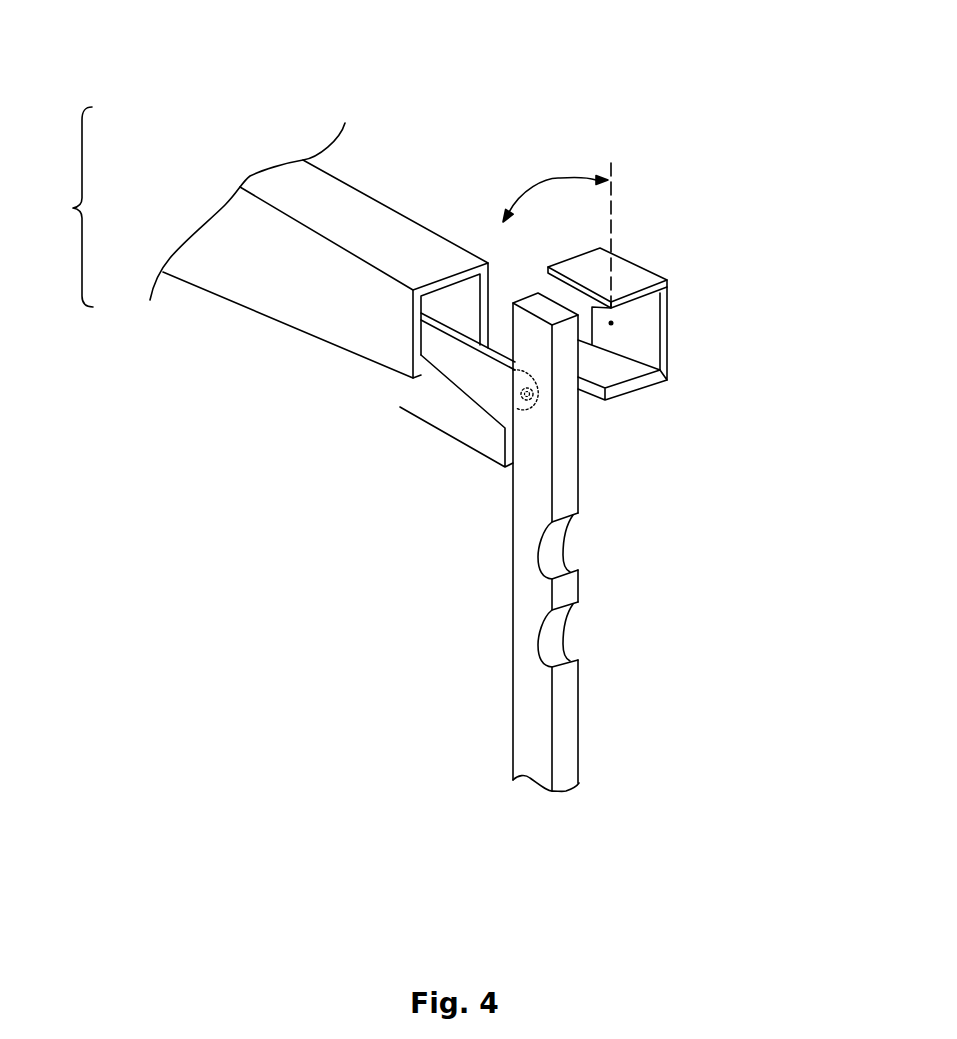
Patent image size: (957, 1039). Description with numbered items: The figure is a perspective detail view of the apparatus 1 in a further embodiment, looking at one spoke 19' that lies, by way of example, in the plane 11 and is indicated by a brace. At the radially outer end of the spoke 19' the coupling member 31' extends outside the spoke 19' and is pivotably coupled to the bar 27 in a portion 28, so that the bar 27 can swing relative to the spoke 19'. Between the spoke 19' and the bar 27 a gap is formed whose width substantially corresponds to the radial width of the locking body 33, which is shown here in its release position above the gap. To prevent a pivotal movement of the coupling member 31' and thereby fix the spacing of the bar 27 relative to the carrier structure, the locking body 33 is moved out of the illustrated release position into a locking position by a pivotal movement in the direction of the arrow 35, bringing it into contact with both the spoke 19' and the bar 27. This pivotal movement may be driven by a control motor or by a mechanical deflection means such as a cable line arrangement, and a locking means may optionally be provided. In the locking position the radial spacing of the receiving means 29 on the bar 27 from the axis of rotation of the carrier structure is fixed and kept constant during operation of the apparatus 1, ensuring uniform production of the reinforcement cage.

The apparatus 1 is at (717, 90).
The plane 11 is at (67, 207).
The spoke 19' is at (319, 226).
The coupling member 31' is at (416, 396).
The bar 27 is at (567, 497).
The portion 28 is at (522, 420).
The receiving means 29 is at (562, 557).
The locking body 33 is at (625, 278).
The arrow 35 is at (556, 176).